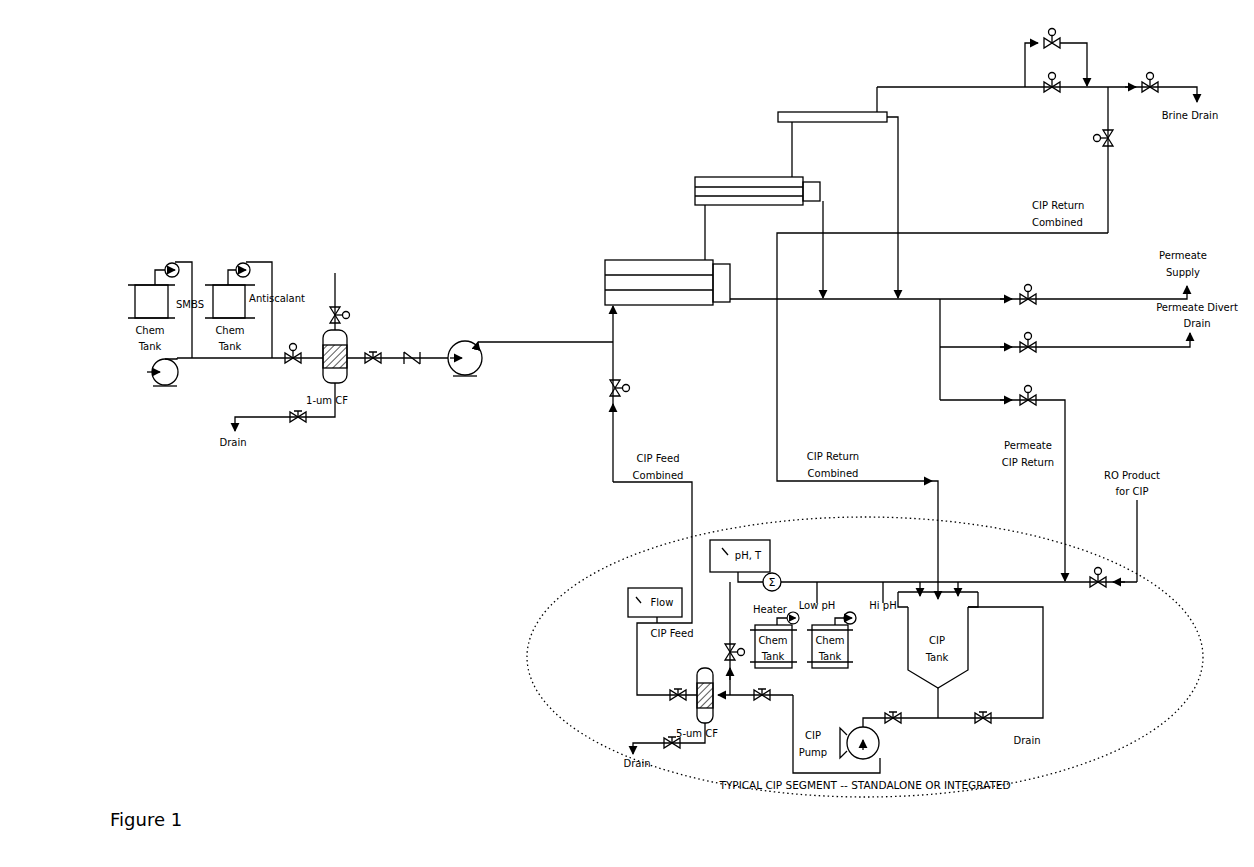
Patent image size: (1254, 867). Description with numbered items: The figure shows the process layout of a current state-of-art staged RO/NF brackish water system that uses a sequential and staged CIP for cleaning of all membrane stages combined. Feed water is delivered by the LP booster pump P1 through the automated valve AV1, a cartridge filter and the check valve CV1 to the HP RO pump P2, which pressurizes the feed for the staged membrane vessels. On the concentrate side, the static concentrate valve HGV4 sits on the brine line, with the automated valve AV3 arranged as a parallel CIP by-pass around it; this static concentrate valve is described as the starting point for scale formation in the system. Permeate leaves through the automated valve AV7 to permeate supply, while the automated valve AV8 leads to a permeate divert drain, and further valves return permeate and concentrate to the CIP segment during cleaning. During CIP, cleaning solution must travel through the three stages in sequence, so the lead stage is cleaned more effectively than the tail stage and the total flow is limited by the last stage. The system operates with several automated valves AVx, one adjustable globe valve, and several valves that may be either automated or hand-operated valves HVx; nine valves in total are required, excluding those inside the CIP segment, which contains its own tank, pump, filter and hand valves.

The LP booster pump P1 is at (165, 391).
The HP RO pump P2 is at (464, 377).
The automated valve AV1 is at (292, 365).
The check valve CV1 is at (412, 369).
The CIP by-pass automated valve AV3 is at (1052, 46).
The static concentrate valve HGV4 is at (1052, 89).
The automated valve AV7 is at (1027, 302).
The automated valve AV8 is at (1027, 351).
The automated valve AVx is at (1107, 586).
The hand-operated valve HVx is at (640, 534).